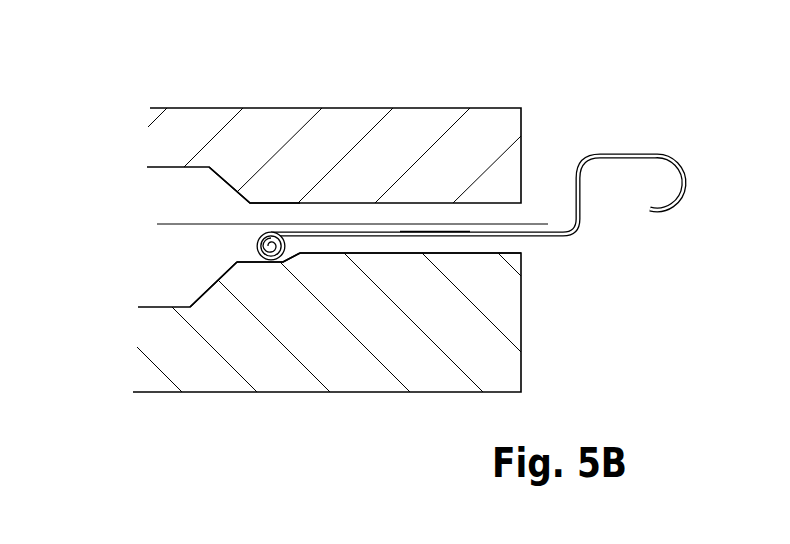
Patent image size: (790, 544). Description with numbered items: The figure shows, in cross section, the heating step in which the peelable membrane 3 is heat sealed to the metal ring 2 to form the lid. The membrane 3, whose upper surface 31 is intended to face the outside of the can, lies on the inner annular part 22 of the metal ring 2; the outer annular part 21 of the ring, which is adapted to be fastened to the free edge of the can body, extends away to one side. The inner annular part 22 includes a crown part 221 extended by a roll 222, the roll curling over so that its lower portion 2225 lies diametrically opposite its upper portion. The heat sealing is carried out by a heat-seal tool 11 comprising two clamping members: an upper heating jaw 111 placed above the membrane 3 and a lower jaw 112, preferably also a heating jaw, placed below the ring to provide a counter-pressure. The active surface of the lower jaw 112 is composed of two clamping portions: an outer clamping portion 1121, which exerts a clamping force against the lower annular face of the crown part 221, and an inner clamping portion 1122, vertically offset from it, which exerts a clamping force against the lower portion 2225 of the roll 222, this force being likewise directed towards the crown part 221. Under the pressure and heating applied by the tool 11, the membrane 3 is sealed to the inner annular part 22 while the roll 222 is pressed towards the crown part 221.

The heat-seal tool 11 is at (151, 136).
The upper heating jaw 111 is at (410, 130).
The upper surface 31 is at (279, 206).
The peelable membrane 3 is at (182, 223).
The metal ring 2 is at (624, 159).
The outer annular part 21 is at (636, 155).
The inner annular part 22 is at (363, 231).
The crown part 221 is at (432, 231).
The roll 222 is at (224, 244).
The lower jaw 112 is at (275, 372).
The inner clamping portion 1122 is at (247, 276).
The lower portion 2225 is at (275, 276).
The outer clamping portion 1121 is at (489, 258).